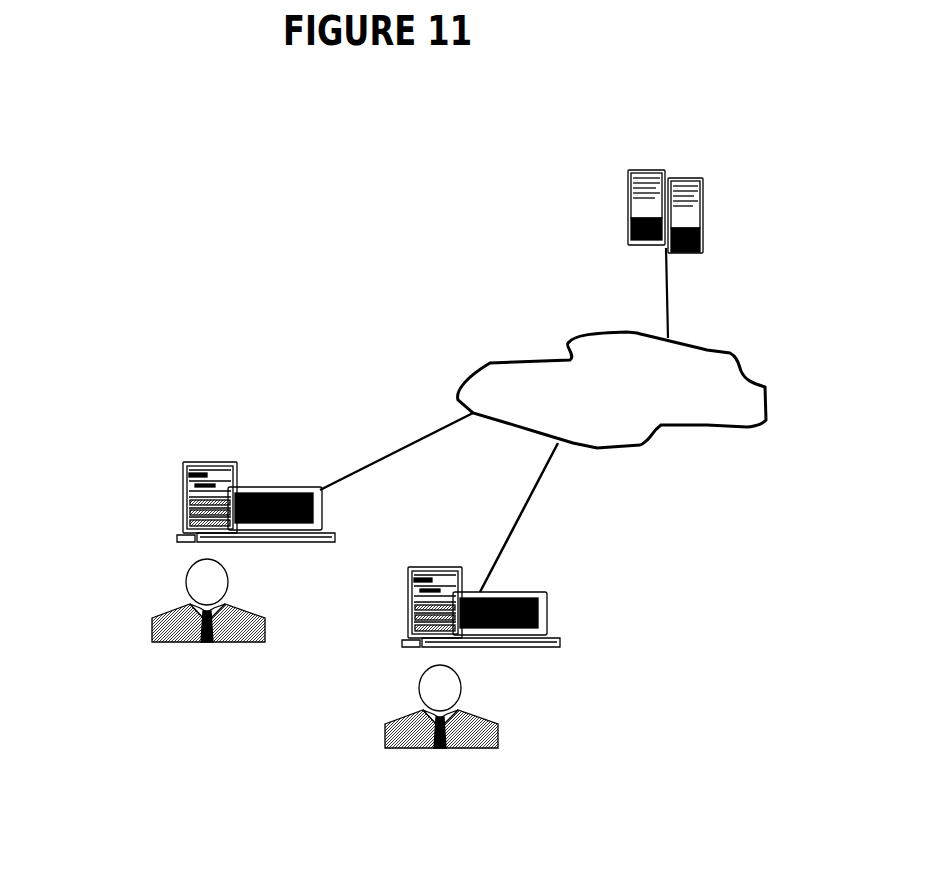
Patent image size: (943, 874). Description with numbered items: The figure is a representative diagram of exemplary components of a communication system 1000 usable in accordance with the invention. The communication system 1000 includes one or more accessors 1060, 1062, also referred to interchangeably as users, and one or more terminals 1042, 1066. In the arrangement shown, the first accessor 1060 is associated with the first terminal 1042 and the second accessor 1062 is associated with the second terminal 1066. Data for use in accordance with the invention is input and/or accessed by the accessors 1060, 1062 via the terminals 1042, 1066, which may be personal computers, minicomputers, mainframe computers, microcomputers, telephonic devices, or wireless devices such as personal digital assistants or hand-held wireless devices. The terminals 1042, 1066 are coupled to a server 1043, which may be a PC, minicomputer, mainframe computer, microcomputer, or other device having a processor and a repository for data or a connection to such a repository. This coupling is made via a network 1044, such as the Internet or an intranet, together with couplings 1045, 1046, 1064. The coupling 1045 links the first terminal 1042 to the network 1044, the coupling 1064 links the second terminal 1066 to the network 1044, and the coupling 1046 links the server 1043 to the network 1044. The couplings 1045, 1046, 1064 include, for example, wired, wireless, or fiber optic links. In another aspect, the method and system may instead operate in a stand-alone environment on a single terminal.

The communication system 1000 is at (281, 193).
The terminal 1042 is at (187, 462).
The server 1043 is at (697, 178).
The network 1044 is at (569, 354).
The coupling 1045 is at (398, 450).
The coupling 1046 is at (666, 290).
The accessor 1060 is at (173, 608).
The accessor 1062 is at (497, 730).
The coupling 1064 is at (526, 505).
The terminal 1066 is at (547, 615).